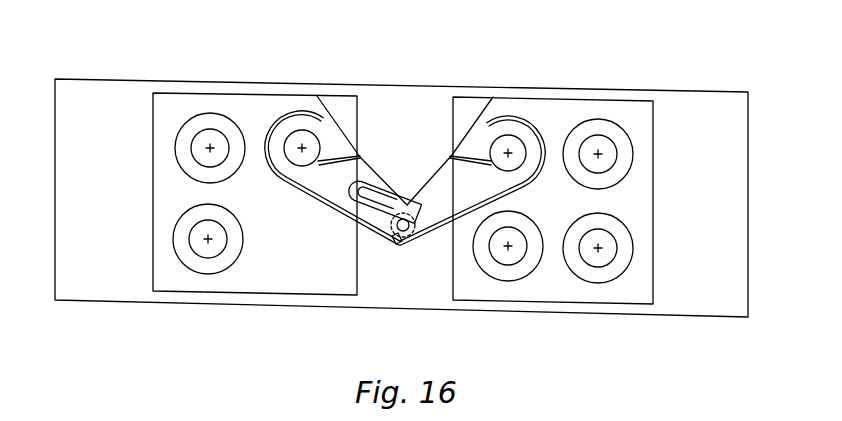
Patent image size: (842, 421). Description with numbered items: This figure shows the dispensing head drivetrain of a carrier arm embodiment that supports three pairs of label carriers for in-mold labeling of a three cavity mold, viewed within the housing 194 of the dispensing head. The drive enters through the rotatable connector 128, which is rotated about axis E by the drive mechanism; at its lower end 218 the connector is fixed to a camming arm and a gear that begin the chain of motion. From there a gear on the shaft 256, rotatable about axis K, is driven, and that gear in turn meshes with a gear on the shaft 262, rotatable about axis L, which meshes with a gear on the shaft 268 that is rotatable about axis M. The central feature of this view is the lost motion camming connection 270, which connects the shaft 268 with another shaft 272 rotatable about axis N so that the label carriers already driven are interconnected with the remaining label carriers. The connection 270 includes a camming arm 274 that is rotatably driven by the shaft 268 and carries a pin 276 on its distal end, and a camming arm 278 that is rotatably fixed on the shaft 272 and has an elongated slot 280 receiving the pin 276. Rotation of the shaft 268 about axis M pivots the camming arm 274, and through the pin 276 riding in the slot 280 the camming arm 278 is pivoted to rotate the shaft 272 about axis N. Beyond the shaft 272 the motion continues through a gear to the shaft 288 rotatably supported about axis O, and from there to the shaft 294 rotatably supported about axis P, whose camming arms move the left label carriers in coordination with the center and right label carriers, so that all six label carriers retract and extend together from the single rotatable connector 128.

The housing 194 is at (673, 83).
The shaft 294 is at (200, 130).
The axis P is at (213, 143).
The shaft 288 is at (217, 250).
The axis O is at (207, 243).
The shaft 272 is at (292, 133).
The axis N is at (305, 146).
The shaft 268 is at (497, 143).
The axis M is at (512, 148).
The shaft 262 is at (605, 142).
The axis K is at (600, 158).
The rotatable connector 128 is at (518, 268).
The lower end of the rotatable connector 218 is at (497, 242).
The axis E is at (507, 247).
The shaft 256 is at (600, 258).
The axis L is at (597, 247).
The camming arm 274 is at (445, 160).
The lost motion camming connection 270 is at (410, 276).
The camming arm 278 is at (372, 197).
The elongated slot 280 is at (378, 186).
The pin 276 is at (393, 243).